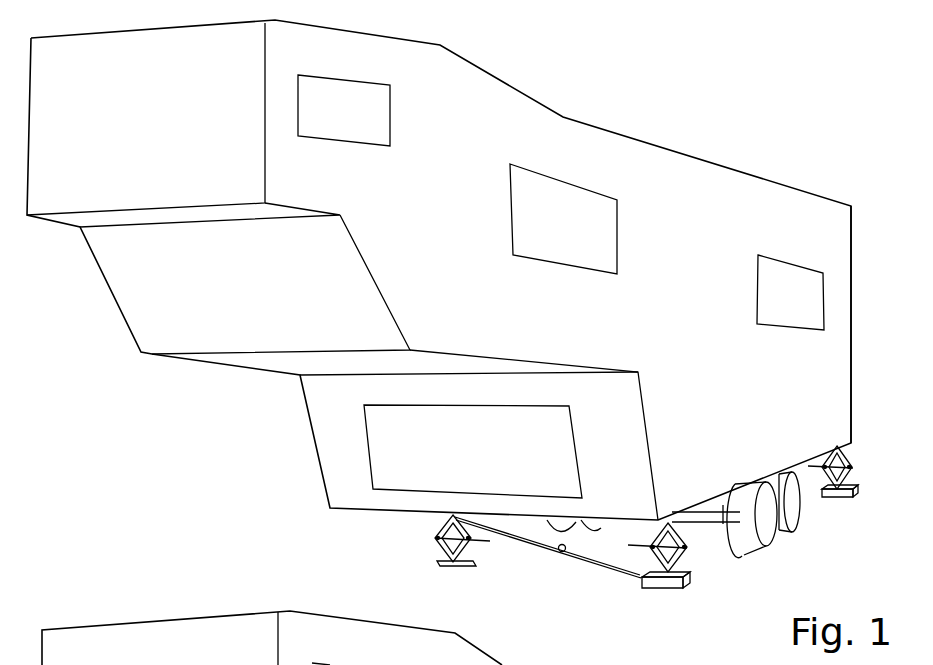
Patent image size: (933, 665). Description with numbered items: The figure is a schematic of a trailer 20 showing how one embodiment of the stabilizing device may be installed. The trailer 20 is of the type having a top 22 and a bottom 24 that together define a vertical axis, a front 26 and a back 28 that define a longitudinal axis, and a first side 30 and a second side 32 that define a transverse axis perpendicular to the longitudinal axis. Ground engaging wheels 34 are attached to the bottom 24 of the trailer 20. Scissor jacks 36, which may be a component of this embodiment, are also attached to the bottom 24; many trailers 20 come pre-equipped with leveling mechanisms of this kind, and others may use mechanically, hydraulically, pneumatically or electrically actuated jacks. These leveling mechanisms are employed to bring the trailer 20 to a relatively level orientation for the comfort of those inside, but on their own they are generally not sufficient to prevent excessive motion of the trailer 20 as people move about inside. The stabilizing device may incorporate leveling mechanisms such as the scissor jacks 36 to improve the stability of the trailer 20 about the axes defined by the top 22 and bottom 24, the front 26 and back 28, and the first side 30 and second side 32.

The trailer 20 is at (551, 66).
The top 22 is at (670, 150).
The bottom 24 is at (727, 540).
The front 26 is at (144, 121).
The back 28 is at (853, 285).
The first side 30 is at (765, 405).
The second side 32 is at (113, 298).
The ground engaging wheels 34 is at (797, 532).
The scissor jacks 36 is at (685, 565).